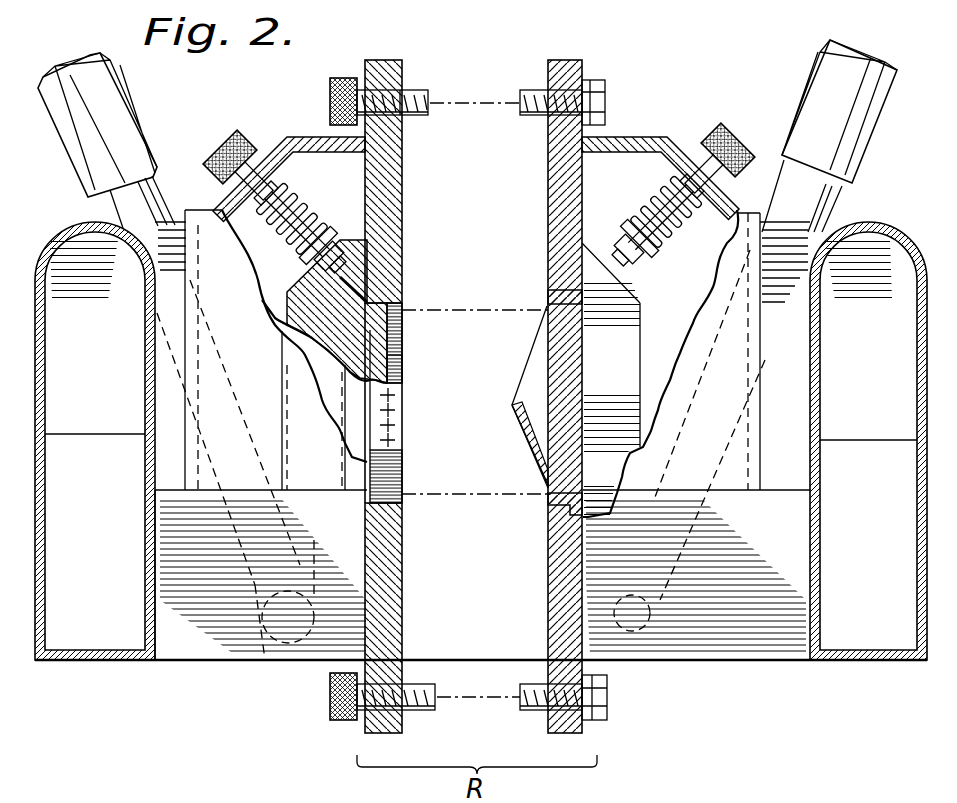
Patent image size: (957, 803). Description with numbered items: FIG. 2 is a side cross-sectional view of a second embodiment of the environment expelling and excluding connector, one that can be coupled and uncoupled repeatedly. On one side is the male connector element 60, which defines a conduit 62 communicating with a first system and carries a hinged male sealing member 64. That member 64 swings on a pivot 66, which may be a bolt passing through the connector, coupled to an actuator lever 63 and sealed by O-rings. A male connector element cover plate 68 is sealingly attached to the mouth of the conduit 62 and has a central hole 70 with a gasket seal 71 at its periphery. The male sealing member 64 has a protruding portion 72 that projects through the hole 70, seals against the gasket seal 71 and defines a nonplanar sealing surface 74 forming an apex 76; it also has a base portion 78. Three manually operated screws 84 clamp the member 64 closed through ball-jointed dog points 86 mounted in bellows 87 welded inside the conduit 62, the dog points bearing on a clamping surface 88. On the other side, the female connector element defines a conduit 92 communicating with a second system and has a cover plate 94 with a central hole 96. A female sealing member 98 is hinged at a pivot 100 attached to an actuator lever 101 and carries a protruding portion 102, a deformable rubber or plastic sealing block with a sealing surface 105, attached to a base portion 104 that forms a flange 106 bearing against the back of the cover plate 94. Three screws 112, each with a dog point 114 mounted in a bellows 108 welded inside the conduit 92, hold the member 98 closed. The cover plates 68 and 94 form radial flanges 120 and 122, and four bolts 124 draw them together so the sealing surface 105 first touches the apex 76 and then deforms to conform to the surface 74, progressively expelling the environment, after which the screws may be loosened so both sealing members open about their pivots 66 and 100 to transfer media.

The male connector element 60 is at (694, 86).
The conduit 62 is at (870, 652).
The actuator lever 63 is at (876, 140).
The male sealing member 64 is at (633, 365).
The pivot 66 is at (646, 632).
The male connector element cover plate 68 is at (548, 145).
The hole 70 is at (544, 516).
The gasket seal 71 is at (548, 296).
The protruding portion 72 is at (533, 412).
The sealing surface 74 is at (530, 458).
The apex 76 is at (512, 402).
The base portion 78 is at (600, 243).
The manually operated screws 84 is at (724, 126).
The dog points 86 is at (642, 280).
The bellows 87 is at (670, 243).
The clamping surface 88 is at (645, 300).
The conduit 92 is at (100, 640).
The cover plate 94 is at (388, 150).
The hole 96 is at (420, 335).
The female sealing member 98 is at (314, 600).
The pivot 100 is at (292, 592).
The actuator lever 101 is at (110, 208).
The protruding portion 102 is at (395, 482).
The base portion 104 is at (265, 305).
The sealing surface 105 is at (395, 367).
The flange 106 is at (367, 245).
The bellows 108 is at (292, 180).
The manually operated screws 112 is at (245, 132).
The dog point 114 is at (316, 222).
The flange 120 is at (568, 60).
The flange 122 is at (388, 60).
The bolts 124 is at (343, 76).